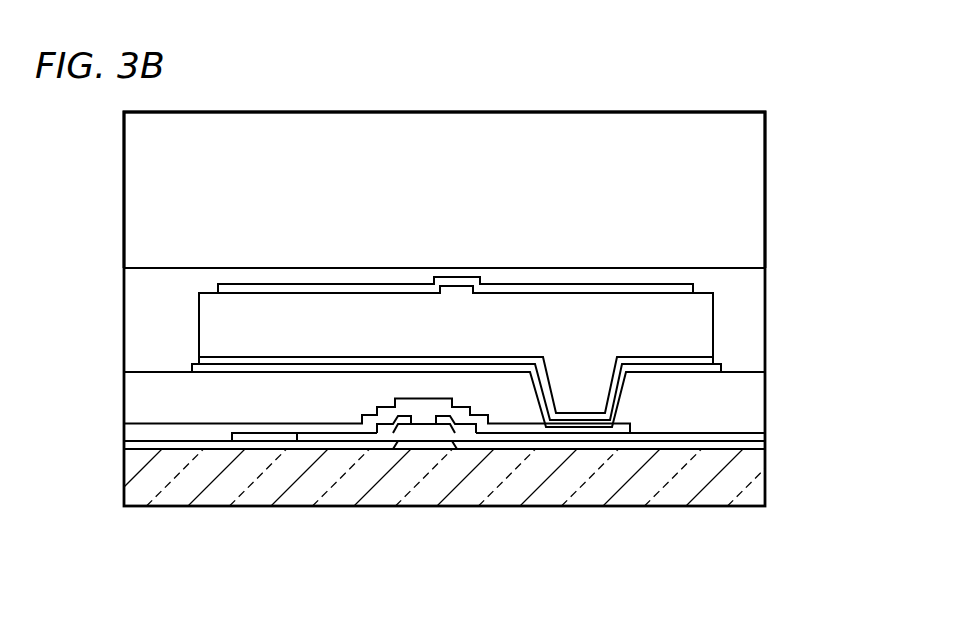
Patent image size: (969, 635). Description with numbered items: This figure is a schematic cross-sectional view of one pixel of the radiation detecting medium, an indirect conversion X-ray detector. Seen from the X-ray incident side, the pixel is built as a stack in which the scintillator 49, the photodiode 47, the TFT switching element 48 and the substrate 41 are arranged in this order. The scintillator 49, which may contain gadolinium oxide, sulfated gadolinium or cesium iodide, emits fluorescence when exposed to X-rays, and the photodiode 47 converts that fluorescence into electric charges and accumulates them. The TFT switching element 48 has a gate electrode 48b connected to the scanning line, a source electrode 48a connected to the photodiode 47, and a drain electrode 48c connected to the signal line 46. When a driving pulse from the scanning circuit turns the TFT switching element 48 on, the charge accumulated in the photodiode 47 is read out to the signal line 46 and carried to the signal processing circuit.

The substrate 41 is at (757, 462).
The signal line 46 is at (258, 444).
The photodiode 47 is at (700, 313).
The TFT switching element 48 is at (422, 514).
The source electrode 48a is at (479, 491).
The gate electrode 48b is at (423, 445).
The drain electrode 48c is at (375, 440).
The scintillator 49 is at (757, 192).